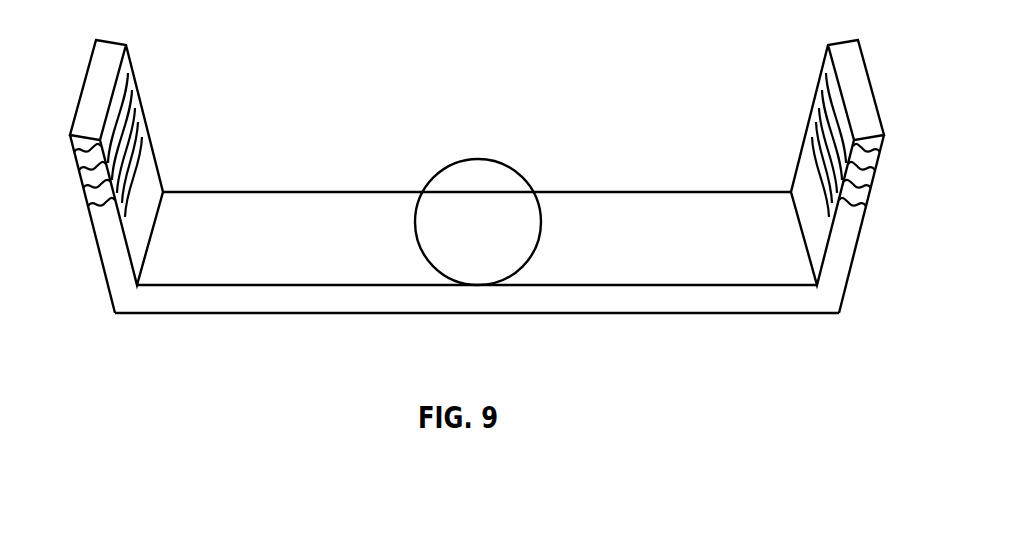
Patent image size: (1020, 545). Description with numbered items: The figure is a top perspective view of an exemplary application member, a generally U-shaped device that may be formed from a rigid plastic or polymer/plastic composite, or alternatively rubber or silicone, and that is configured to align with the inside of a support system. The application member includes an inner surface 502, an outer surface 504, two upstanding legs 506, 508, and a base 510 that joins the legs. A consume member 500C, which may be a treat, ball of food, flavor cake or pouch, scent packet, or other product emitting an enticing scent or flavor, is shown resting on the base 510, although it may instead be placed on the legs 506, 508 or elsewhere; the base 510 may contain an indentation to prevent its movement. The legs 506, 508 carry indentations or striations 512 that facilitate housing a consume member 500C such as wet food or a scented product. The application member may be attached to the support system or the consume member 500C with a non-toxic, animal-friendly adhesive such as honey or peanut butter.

The consume member 500C is at (488, 183).
The inner surface 502 is at (135, 82).
The outer surface 504 is at (92, 233).
The leg 506 is at (64, 72).
The leg 508 is at (890, 72).
The base 510 is at (650, 324).
The indentations/striations 512 is at (815, 123).